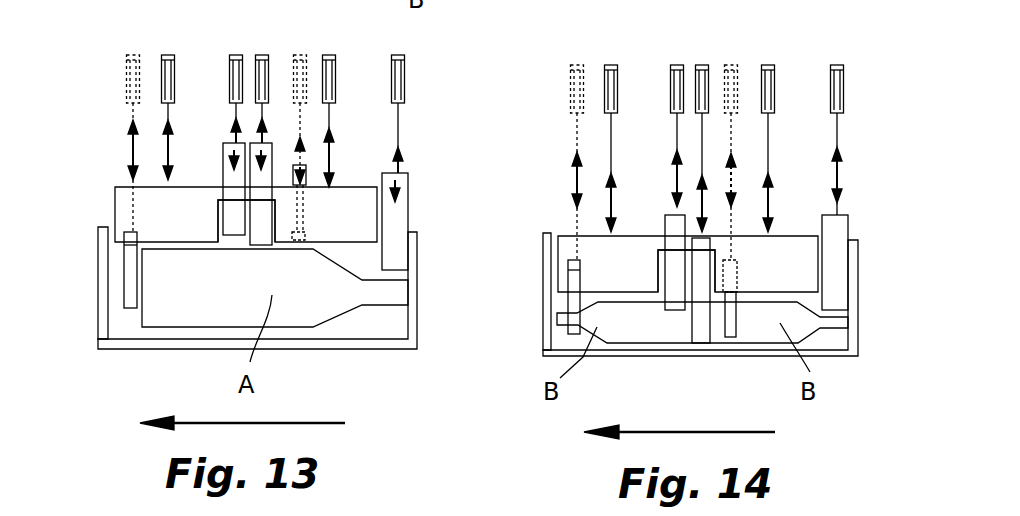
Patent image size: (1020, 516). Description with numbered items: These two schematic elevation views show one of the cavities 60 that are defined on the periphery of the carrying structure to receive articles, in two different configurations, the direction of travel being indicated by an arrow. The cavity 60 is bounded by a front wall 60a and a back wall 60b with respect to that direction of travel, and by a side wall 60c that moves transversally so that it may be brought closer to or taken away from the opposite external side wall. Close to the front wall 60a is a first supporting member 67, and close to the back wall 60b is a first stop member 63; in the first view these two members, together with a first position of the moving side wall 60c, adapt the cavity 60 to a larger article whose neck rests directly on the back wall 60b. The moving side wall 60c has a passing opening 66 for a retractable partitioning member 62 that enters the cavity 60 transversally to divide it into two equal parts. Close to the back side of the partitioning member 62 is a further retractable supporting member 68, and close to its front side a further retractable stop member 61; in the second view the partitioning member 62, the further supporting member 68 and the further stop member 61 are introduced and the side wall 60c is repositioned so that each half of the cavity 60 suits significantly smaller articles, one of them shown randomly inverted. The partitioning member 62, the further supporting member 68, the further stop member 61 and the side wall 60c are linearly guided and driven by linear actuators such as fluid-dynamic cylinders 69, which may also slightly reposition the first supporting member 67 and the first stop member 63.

In FIG. 13, the cavity 60 is at (262, 272).
In FIG. 14, the cavity 60 is at (691, 314).
In FIG. 13, the front wall 60a is at (100, 308).
In FIG. 14, the front wall 60a is at (550, 302).
In FIG. 13, the back wall 60b is at (378, 362).
In FIG. 14, the back wall 60b is at (850, 337).
In FIG. 13, the moving side wall 60c is at (113, 200).
In FIG. 14, the moving side wall 60c is at (560, 236).
In FIG. 13, the further retractable stop member 61 is at (235, 225).
In FIG. 14, the further retractable stop member 61 is at (640, 340).
In FIG. 13, the retractable partitioning member 62 is at (262, 235).
In FIG. 14, the retractable partitioning member 62 is at (705, 345).
In FIG. 13, the first stop member 63 is at (397, 255).
In FIG. 14, the first stop member 63 is at (832, 278).
In FIG. 13, the passing opening 66 is at (218, 200).
In FIG. 14, the passing opening 66 is at (662, 248).
In FIG. 13, the first supporting member 67 is at (128, 283).
In FIG. 14, the first supporting member 67 is at (563, 287).
In FIG. 13, the further retractable supporting member 68 is at (300, 230).
In FIG. 14, the further retractable supporting member 68 is at (742, 317).
In FIG. 13, the fluid-dynamic cylinders 69 is at (266, 56).
In FIG. 14, the fluid-dynamic cylinders 69 is at (703, 64).